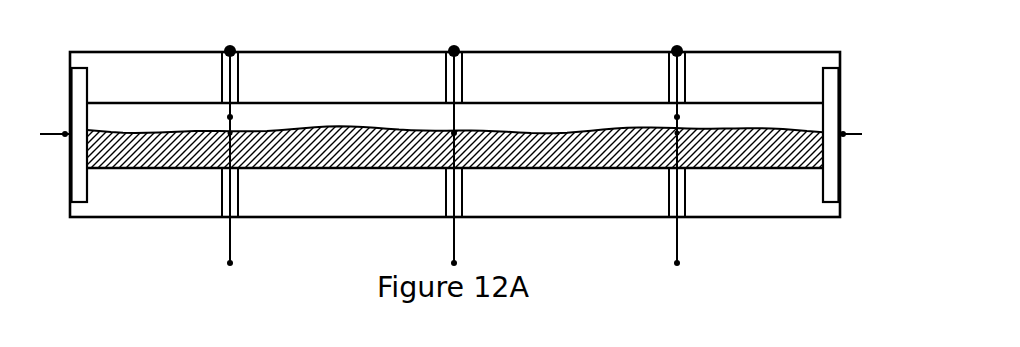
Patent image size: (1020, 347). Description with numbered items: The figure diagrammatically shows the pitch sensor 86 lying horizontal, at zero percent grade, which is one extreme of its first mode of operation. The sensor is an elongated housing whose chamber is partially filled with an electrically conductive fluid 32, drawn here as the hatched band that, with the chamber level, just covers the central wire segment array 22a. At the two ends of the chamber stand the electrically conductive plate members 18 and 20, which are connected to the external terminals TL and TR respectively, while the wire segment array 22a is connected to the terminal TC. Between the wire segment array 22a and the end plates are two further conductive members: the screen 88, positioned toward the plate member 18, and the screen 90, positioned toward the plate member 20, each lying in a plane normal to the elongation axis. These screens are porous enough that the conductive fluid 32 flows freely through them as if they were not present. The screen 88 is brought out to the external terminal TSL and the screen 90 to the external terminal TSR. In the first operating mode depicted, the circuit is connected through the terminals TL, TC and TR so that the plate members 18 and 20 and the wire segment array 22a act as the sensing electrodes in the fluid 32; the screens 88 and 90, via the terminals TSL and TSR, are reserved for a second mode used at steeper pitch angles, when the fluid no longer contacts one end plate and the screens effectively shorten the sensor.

The pitch sensor 86 is at (270, 34).
The fourth electrically conductive member 88 is at (229, 117).
The wire segment array 22a is at (451, 117).
The fifth electrically conductive member 90 is at (676, 117).
The plate member 18 is at (80, 186).
The plate member 20 is at (830, 180).
The conductive fluid 32 is at (530, 148).
The terminal TL is at (64, 136).
The terminal TR is at (844, 134).
The external terminal TSL is at (231, 263).
The terminal TC is at (455, 263).
The external terminal TSR is at (678, 263).